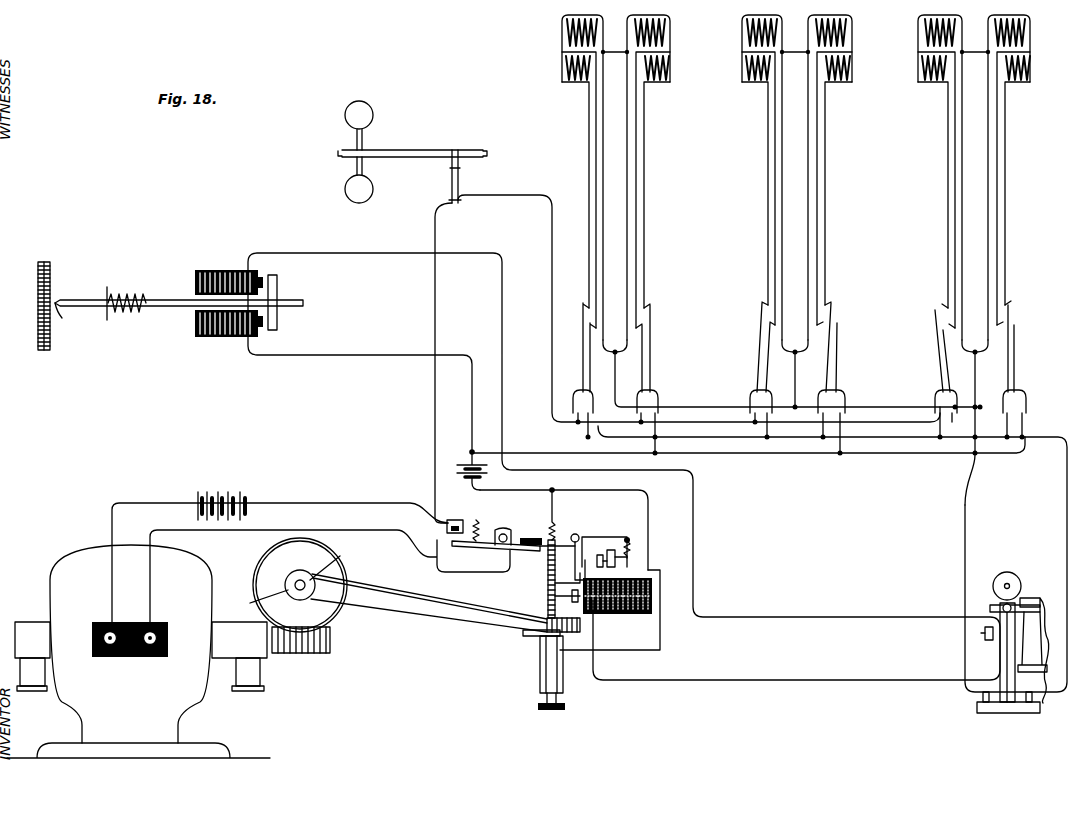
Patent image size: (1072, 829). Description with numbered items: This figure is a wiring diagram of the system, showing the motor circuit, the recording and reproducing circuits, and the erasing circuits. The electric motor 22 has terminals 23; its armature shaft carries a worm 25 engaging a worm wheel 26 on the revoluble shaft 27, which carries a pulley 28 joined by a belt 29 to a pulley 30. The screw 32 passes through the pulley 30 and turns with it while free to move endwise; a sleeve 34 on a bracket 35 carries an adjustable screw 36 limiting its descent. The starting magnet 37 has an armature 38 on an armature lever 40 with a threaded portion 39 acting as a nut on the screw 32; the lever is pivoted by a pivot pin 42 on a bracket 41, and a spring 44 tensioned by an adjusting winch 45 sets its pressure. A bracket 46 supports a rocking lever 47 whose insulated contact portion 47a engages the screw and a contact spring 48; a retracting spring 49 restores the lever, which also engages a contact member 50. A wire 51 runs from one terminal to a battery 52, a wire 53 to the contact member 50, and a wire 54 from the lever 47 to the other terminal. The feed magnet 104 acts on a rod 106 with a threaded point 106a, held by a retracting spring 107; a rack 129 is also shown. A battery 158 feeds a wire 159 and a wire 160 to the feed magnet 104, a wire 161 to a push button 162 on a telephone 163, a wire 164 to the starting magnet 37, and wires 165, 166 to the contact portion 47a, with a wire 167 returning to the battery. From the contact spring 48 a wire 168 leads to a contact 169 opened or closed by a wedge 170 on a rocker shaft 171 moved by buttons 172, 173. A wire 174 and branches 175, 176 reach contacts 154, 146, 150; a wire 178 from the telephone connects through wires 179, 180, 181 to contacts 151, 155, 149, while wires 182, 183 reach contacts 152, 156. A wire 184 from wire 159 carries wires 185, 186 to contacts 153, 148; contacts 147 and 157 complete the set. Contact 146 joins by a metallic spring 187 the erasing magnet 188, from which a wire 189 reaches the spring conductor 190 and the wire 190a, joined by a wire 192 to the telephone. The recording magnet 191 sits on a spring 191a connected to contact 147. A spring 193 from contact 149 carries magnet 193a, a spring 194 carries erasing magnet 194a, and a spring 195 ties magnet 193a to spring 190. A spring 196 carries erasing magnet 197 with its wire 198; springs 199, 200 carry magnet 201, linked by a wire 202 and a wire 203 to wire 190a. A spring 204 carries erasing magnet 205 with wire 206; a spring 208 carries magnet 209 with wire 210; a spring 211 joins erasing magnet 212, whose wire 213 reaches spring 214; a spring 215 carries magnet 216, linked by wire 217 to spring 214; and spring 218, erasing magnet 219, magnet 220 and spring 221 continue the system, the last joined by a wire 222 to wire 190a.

The electric motor 22 is at (138, 651).
The terminals 23 is at (92, 639).
The worm 25 is at (320, 653).
The worm wheel 26 is at (268, 572).
The revoluble shaft 27 is at (270, 590).
The pulley 28 is at (332, 560).
The belt 29 is at (429, 600).
The pulley 30 is at (528, 636).
The screw 32 is at (548, 569).
The sleeve 34 is at (540, 671).
The bracket 35 is at (626, 650).
The adjustable screw 36 is at (536, 705).
The starting magnet 37 is at (618, 614).
The armature 38 is at (572, 602).
The threaded portion 39 is at (555, 598).
The armature lever 40 is at (555, 585).
The bracket 41 is at (591, 562).
The pivot pin 42 is at (582, 532).
The spring 44 is at (630, 548).
The adjusting winch 45 is at (628, 557).
The bracket 46 is at (608, 537).
The rocking lever 47 is at (488, 548).
The contact portion 47a is at (560, 542).
The contact spring 48 is at (530, 538).
The retracting spring 49 is at (476, 520).
The contact member 50 is at (452, 520).
The wire 51 is at (150, 503).
The battery 52 is at (238, 492).
The wire 53 is at (346, 503).
The wire 54 is at (297, 530).
The feed magnet 104 is at (215, 337).
The rod 106 is at (90, 295).
The threaded point 106a is at (74, 321).
The retracting spring 107 is at (128, 308).
The rack 129 is at (38, 312).
The electrical contact 146 is at (582, 305).
The electrical contact 147 is at (588, 332).
The electrical contact 148 is at (652, 308).
The electrical contact 149 is at (650, 328).
The electrical contact 150 is at (760, 313).
The electrical contact 151 is at (766, 330).
The electrical contact 152 is at (838, 326).
The electrical contact 153 is at (834, 308).
The electrical contact 154 is at (934, 315).
The electrical contact 155 is at (944, 336).
The electrical contact 156 is at (1015, 322).
The electrical contact 157 is at (1010, 306).
The battery 158 is at (483, 476).
The wire 159 is at (470, 452).
The wire 160 is at (472, 394).
The wire 161 is at (330, 253).
The push button 162 is at (985, 636).
The telephone 163 is at (1006, 708).
The wire 164 is at (780, 680).
The wire 165 is at (620, 492).
The wire 166 is at (552, 498).
The wire 167 is at (512, 490).
The wire 168 is at (433, 376).
The contact 169 is at (458, 183).
The wedge 170 is at (456, 148).
The rocker shaft 171 is at (415, 146).
The button 172 is at (369, 186).
The button 173 is at (369, 108).
The wire 174 is at (549, 210).
The wire 175 is at (574, 398).
The wire 176 is at (752, 398).
The wire 178 is at (603, 435).
The wire 179 is at (772, 394).
The wire 180 is at (952, 396).
The wire 181 is at (638, 396).
The wire 182 is at (815, 442).
The wire 183 is at (1003, 398).
The wire 184 is at (1024, 420).
The wire 185 is at (842, 455).
The wire 186 is at (658, 454).
The metallic spring 187 is at (596, 140).
The erasing magnet 188 is at (562, 74).
The wire 189 is at (562, 52).
The conductor 190 is at (602, 117).
The wire 190a is at (700, 402).
The recording magnet 191 is at (560, 29).
The spring 191a is at (589, 163).
The wire 192 is at (965, 508).
The metallic spring 193 is at (636, 162).
The recording and reproducing magnet 193a is at (670, 27).
The spring 194 is at (644, 195).
The erasing magnet 194a is at (670, 64).
The spring 195 is at (628, 140).
The spring 196 is at (768, 187).
The erasing magnet 197 is at (755, 80).
The wire 198 is at (742, 66).
The spring 199 is at (782, 148).
The spring 200 is at (768, 137).
The recording and reproducing magnet 201 is at (742, 35).
The wire 202 is at (784, 50).
The wire 203 is at (796, 358).
The spring 204 is at (817, 226).
The erasing magnet 205 is at (850, 78).
The wire 206 is at (850, 54).
The spring 208 is at (820, 182).
The recording and reproducing magnet 209 is at (848, 36).
The wire 210 is at (812, 17).
The spring 211 is at (948, 207).
The erasing magnet 212 is at (933, 82).
The wire 213 is at (918, 58).
The spring 214 is at (962, 118).
The spring 215 is at (955, 158).
The recording and reproducing magnet 216 is at (918, 22).
The wire 217 is at (964, 32).
The spring 218 is at (997, 143).
The erasing magnet 219 is at (1028, 76).
The recording and reproducing magnet 220 is at (1028, 30).
The spring 221 is at (988, 198).
The wire 222 is at (978, 378).